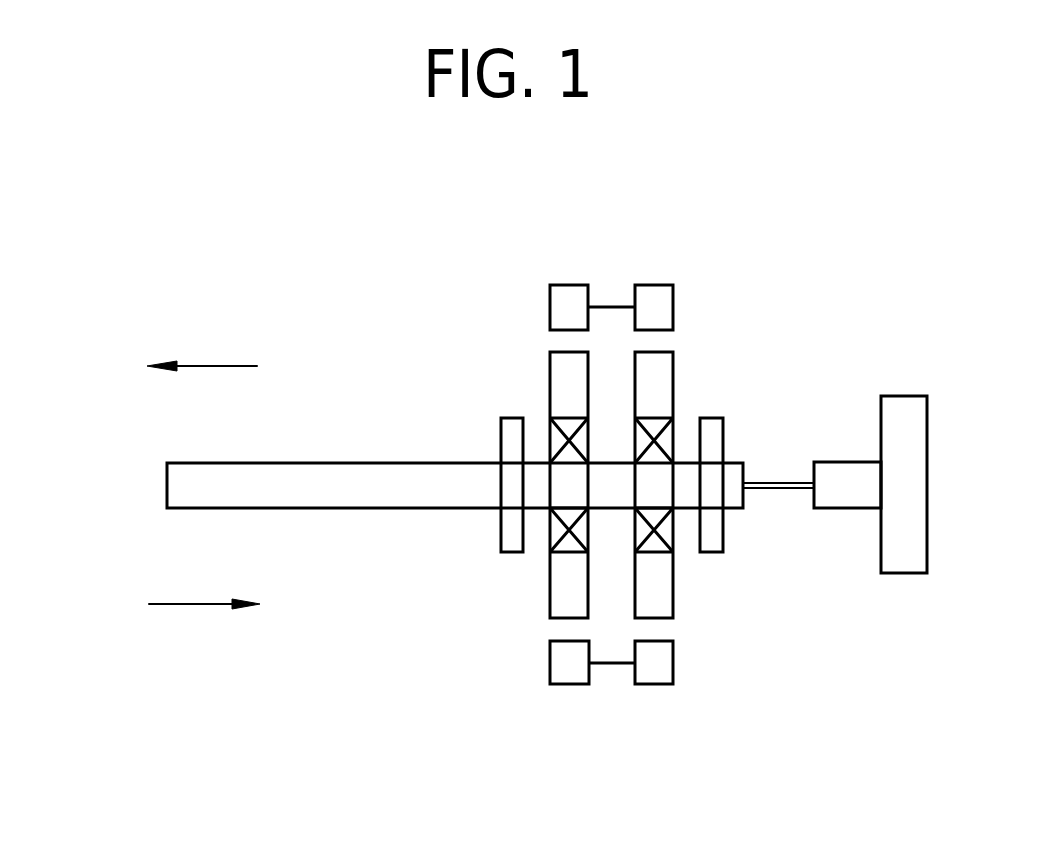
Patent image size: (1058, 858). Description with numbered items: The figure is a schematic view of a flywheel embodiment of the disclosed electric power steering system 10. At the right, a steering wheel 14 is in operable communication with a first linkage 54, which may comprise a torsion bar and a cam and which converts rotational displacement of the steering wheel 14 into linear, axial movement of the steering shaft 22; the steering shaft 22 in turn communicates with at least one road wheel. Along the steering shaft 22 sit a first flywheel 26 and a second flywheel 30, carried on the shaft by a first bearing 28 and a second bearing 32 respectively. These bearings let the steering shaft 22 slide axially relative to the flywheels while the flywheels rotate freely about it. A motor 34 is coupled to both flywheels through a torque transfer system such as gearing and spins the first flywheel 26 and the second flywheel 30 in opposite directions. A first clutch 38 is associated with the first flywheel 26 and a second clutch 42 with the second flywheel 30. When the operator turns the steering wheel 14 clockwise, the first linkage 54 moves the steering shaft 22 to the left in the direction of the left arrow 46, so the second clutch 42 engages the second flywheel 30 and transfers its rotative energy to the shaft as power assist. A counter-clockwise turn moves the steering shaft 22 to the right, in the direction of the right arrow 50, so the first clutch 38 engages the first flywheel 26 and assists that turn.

The steering system 10 is at (390, 772).
The steering wheel 14 is at (902, 560).
The steering shaft 22 is at (188, 481).
The first flywheel 26 is at (660, 595).
The first bearing 28 is at (676, 437).
The second flywheel 30 is at (557, 598).
The second bearing 32 is at (550, 443).
The motor 34 is at (612, 307).
The first clutch 38 is at (712, 436).
The second clutch 42 is at (512, 530).
The left arrow 46 is at (193, 366).
The right arrow 50 is at (193, 604).
The first linkage 54 is at (788, 478).